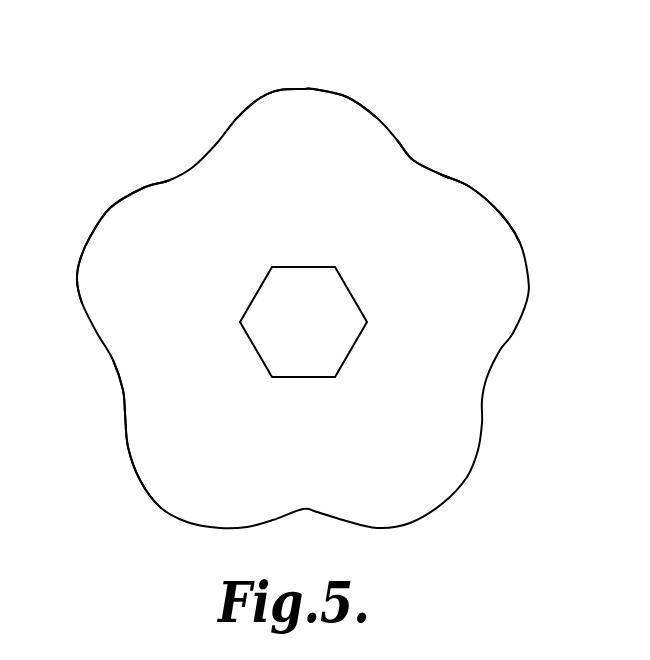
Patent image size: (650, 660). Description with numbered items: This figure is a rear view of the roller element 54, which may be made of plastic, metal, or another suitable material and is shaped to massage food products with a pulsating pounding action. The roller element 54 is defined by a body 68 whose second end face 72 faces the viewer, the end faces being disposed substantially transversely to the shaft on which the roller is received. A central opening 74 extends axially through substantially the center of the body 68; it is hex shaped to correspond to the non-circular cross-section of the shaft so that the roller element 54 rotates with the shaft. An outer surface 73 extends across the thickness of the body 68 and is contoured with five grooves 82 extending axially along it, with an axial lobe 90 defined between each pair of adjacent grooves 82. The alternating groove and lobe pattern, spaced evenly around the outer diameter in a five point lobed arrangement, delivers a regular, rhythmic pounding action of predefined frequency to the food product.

The roller element 54 is at (143, 112).
The axial lobe 90 is at (318, 90).
The groove 82 is at (413, 160).
The outer surface 73 is at (472, 190).
The second end face 72 is at (128, 245).
The body 68 is at (140, 393).
The central opening 74 is at (345, 342).